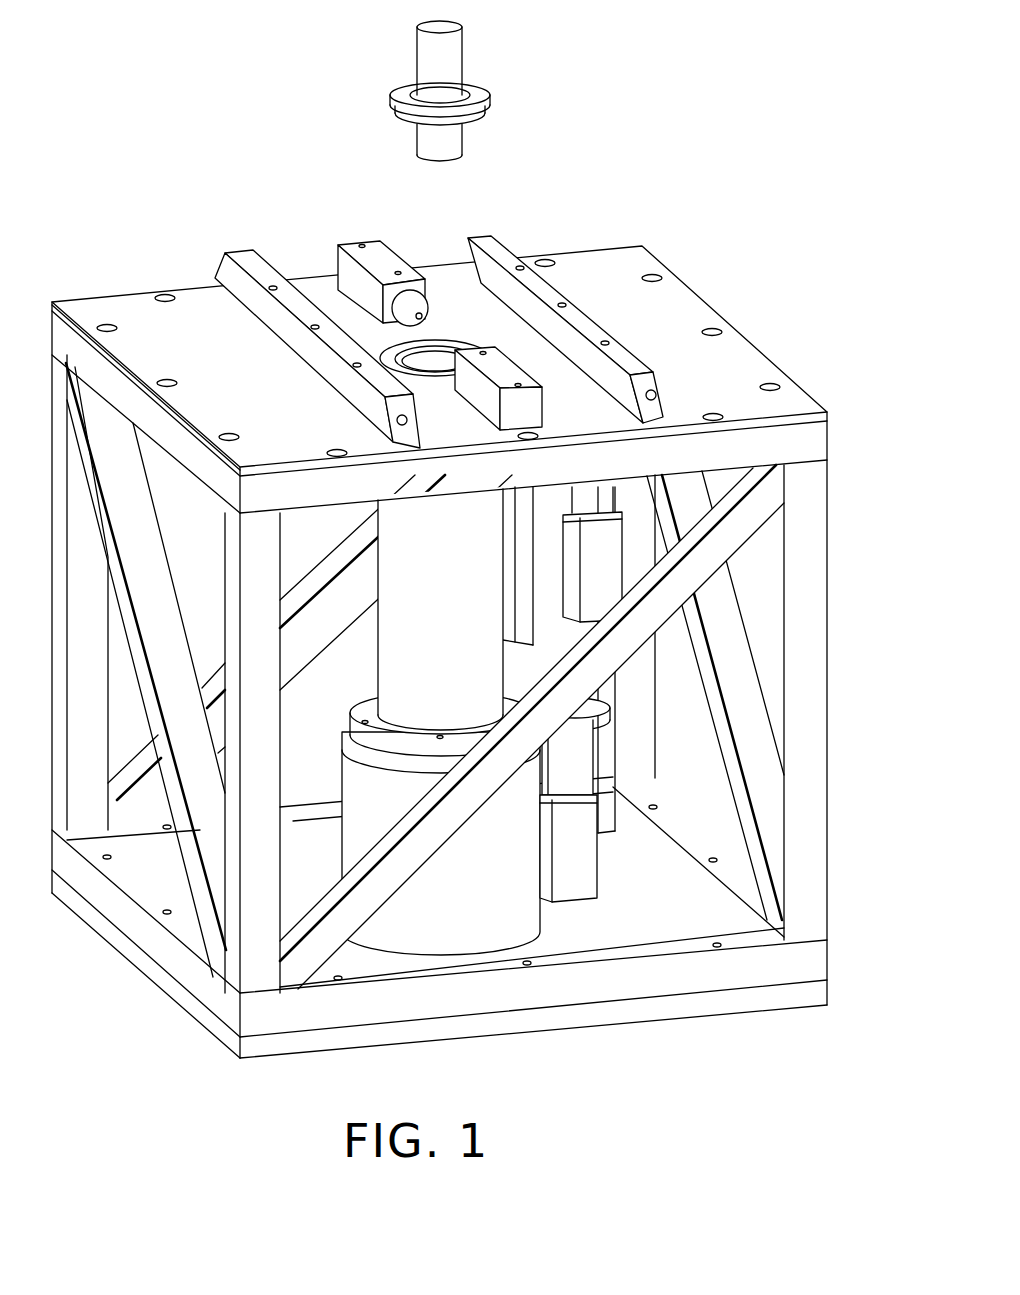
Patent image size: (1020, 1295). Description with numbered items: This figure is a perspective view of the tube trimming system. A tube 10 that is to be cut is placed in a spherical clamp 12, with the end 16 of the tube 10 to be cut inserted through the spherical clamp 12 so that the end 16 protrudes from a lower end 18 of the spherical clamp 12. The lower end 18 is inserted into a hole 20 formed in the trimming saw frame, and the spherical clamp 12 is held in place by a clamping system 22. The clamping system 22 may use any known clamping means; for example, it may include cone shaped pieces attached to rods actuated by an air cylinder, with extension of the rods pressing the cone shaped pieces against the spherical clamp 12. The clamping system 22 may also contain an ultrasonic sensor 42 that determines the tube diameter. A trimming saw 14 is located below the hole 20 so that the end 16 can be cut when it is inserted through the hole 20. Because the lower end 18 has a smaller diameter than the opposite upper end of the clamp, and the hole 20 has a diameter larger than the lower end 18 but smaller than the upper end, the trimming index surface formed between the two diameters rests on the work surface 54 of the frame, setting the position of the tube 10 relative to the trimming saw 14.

The tube 10 is at (453, 53).
The spherical clamp 12 is at (466, 92).
The trimming saw 14 is at (356, 639).
The end of tube 16 is at (482, 142).
The lower end 18 is at (408, 120).
The hole 20 is at (423, 353).
The clamping system 22 is at (380, 242).
The ultrasonic sensor 42 is at (408, 315).
The work surface 54 is at (722, 360).